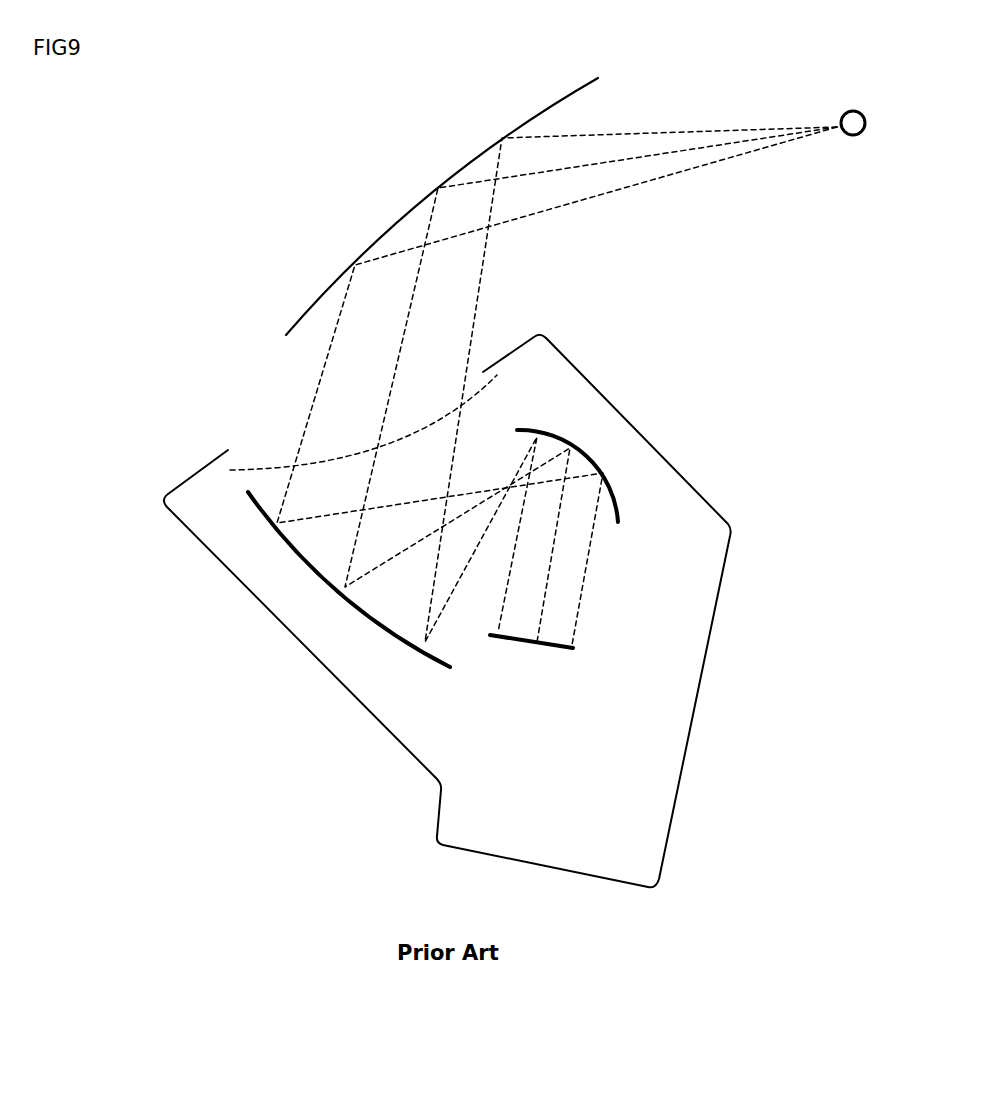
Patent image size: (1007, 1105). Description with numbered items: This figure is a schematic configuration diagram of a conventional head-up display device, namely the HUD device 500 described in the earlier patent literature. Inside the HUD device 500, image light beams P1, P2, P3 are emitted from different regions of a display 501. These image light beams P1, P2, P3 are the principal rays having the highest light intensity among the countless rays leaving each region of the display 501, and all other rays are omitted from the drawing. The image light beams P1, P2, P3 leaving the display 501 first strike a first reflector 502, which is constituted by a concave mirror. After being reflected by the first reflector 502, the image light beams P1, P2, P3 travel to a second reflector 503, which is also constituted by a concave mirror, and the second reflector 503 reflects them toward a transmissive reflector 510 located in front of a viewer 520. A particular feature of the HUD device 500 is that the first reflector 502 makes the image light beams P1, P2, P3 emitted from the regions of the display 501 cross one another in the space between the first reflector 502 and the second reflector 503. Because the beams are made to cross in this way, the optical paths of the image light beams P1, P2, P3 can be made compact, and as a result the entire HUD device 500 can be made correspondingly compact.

The HUD device 500 is at (596, 365).
The display 501 is at (573, 646).
The first reflector 502 is at (540, 429).
The second reflector 503 is at (414, 647).
The transmissive reflector 510 is at (405, 217).
The viewer 520 is at (842, 114).
The image light beam P1 is at (325, 363).
The image light beam P2 is at (422, 270).
The image light beam P3 is at (475, 327).